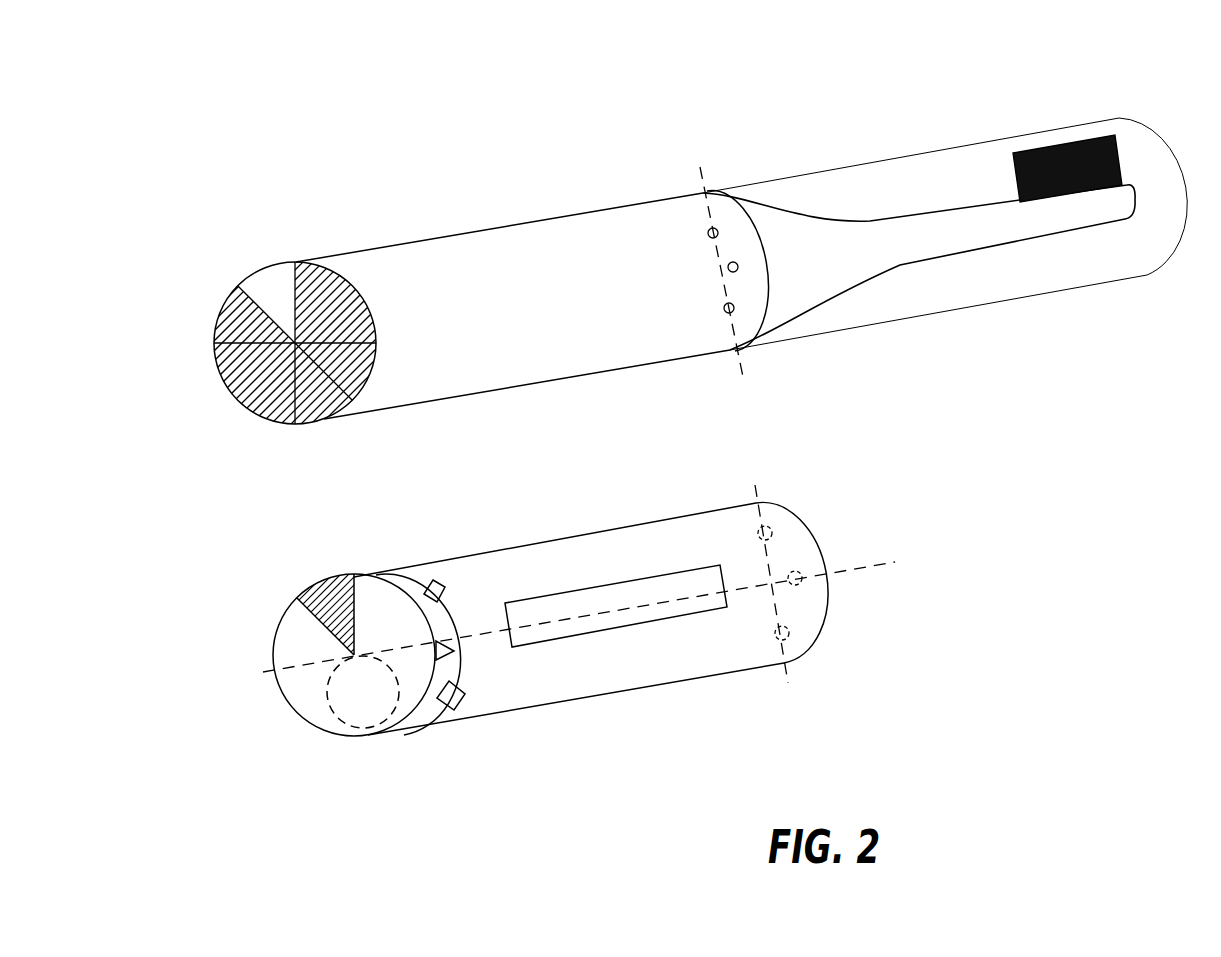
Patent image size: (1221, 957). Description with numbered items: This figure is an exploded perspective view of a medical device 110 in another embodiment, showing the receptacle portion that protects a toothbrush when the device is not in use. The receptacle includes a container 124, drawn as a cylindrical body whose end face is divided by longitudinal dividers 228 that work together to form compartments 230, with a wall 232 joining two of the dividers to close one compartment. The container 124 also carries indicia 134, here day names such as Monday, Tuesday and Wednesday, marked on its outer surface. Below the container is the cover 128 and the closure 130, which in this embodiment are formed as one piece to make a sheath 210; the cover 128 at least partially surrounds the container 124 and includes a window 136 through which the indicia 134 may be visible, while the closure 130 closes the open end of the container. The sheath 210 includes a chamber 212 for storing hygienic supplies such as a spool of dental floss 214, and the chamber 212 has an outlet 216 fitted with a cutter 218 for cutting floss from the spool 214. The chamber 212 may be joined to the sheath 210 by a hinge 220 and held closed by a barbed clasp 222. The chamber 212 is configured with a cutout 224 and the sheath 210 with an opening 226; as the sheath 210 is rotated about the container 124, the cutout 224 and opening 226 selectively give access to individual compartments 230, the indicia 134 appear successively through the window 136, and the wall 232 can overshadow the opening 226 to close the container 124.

The medical device 110 is at (312, 107).
The container 124 is at (553, 215).
The indicium 134 is at (470, 254).
The wall 232 is at (277, 283).
The longitudinal dividers 228 is at (234, 342).
The compartments 230 is at (232, 377).
The sheath 210 is at (910, 485).
The cover 128 is at (592, 700).
The cutter 218 is at (460, 623).
The closure 130 is at (466, 678).
The chamber 212 is at (303, 693).
The spool of dental floss 214 is at (341, 722).
The cutout 224 is at (300, 594).
The opening 226 is at (340, 600).
The barbed clasp 222 is at (441, 583).
The hinge 220 is at (456, 712).
The outlet 216 is at (458, 656).
The window 136 is at (620, 628).